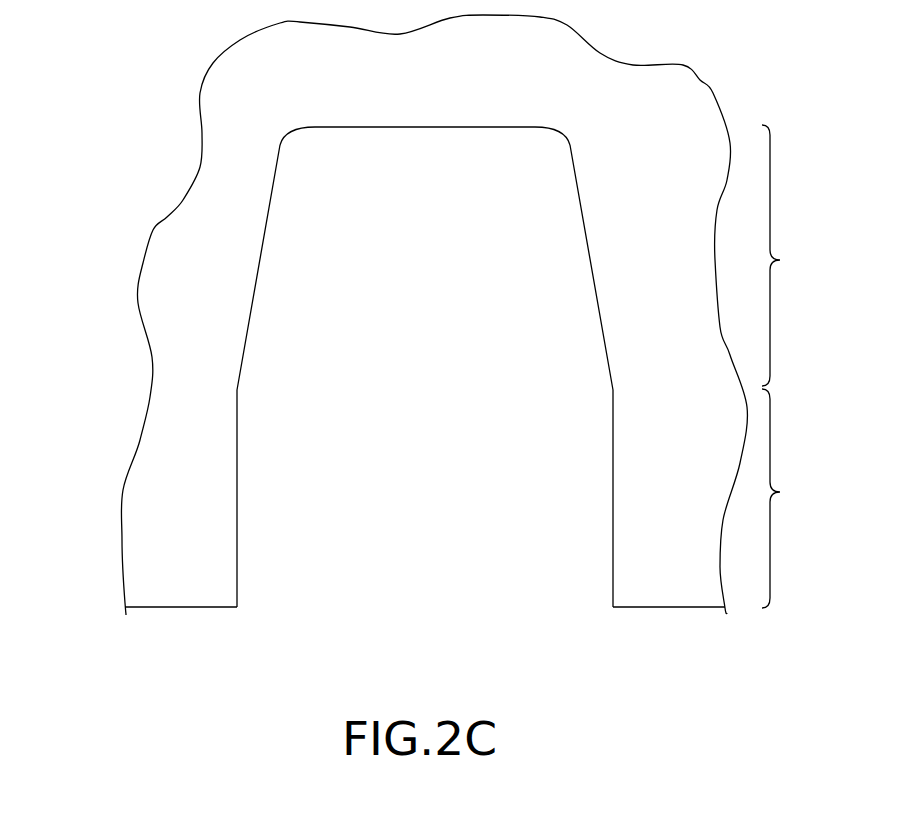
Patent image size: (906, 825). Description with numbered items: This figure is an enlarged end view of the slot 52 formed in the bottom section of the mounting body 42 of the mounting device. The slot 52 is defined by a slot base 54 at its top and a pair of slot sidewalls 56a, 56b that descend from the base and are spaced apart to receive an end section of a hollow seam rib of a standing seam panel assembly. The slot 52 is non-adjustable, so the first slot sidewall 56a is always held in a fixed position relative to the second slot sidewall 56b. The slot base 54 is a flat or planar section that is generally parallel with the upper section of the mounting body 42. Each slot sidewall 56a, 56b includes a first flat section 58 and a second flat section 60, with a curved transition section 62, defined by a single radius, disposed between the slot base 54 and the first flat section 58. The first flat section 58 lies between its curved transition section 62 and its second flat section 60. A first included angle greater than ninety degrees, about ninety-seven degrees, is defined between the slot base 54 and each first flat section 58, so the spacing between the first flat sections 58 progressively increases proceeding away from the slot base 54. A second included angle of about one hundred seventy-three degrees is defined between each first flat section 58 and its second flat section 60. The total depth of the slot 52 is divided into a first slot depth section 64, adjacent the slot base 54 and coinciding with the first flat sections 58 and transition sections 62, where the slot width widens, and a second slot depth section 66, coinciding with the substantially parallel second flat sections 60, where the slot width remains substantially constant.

The mounting body 42 is at (437, 88).
The slot 52 is at (425, 341).
The slot base 54 is at (418, 128).
The first slot sidewall 56a is at (275, 528).
The second slot sidewall 56b is at (556, 528).
The first flat section 58 is at (259, 267).
The second flat section 60 is at (238, 490).
The curved transition section 62 is at (295, 131).
The first slot depth section 64 is at (788, 255).
The second slot depth section 66 is at (788, 498).